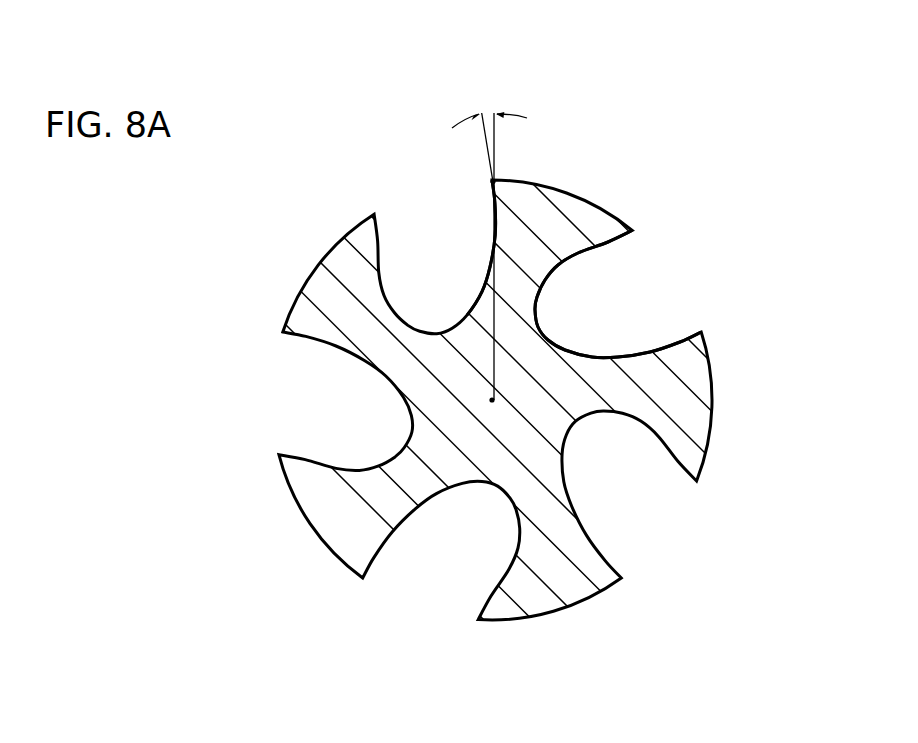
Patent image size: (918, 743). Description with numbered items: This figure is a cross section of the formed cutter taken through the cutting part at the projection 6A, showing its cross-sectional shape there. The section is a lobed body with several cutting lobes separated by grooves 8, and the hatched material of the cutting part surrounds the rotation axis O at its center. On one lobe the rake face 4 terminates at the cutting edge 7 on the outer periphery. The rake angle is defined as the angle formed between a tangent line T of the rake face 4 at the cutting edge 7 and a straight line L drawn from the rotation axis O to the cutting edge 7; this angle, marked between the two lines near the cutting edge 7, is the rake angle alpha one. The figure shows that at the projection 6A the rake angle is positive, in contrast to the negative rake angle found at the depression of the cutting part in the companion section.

The rake face 4 is at (493, 215).
The cutting edge 7 is at (495, 180).
The flute (chip discharge groove) 8 is at (568, 348).
The projection 6A is at (713, 388).
The tangent line T is at (488, 148).
The straight line L is at (495, 140).
The rotation axis O is at (497, 411).